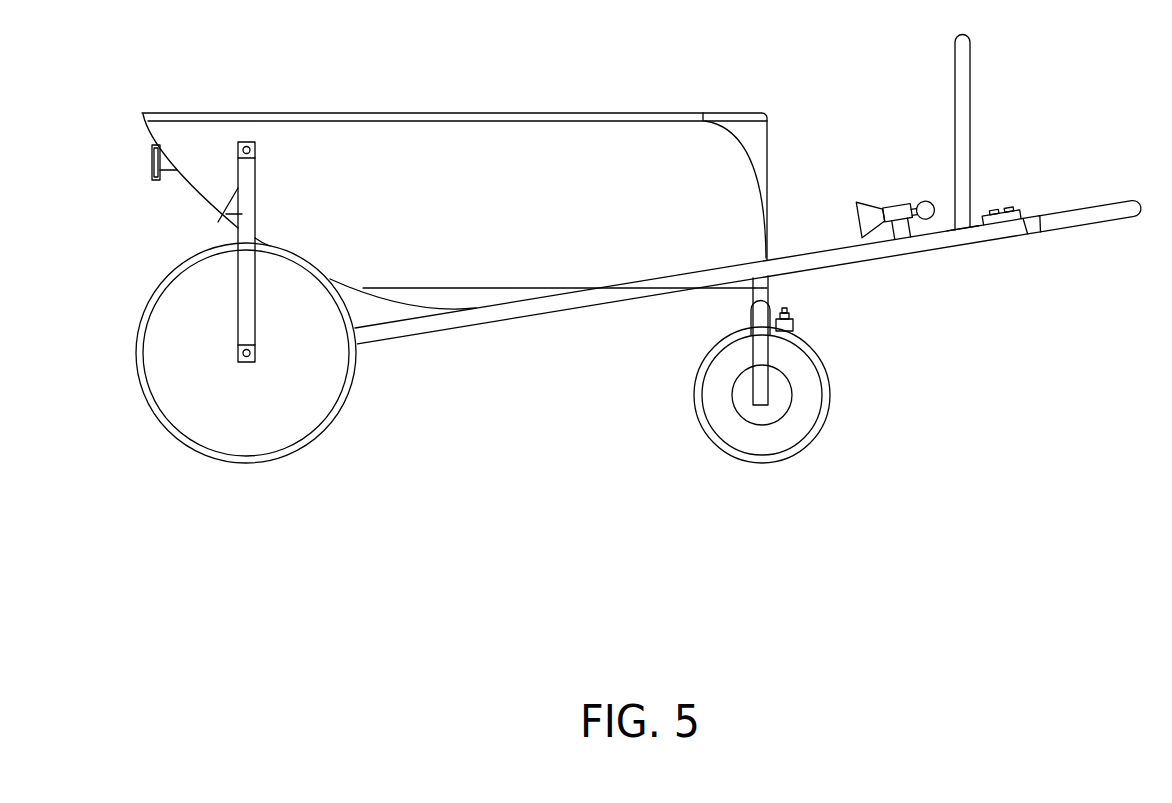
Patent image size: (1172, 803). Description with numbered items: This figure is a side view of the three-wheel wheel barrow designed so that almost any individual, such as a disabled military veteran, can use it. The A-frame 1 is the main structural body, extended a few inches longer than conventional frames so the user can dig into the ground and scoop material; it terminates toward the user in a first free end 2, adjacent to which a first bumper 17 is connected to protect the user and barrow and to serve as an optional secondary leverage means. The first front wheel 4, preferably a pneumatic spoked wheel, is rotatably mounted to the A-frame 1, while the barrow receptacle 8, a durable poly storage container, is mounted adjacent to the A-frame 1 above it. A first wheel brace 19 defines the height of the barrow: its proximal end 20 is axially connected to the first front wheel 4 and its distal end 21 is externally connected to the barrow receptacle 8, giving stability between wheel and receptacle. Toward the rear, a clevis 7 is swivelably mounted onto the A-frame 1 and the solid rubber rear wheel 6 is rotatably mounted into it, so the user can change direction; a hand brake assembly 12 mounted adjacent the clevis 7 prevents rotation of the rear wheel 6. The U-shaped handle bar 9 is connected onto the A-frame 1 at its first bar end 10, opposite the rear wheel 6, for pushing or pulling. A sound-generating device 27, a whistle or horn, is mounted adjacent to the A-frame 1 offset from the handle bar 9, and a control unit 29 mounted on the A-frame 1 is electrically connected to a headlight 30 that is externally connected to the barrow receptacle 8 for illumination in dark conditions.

The A-frame 1 is at (502, 315).
The first free end 2 is at (1036, 250).
The first front wheel 4 is at (313, 384).
The rear wheel 6 is at (822, 416).
The clevis 7 is at (760, 301).
The barrow receptacle 8 is at (477, 184).
The handle bar 9 is at (966, 129).
The first bar end 10 is at (962, 241).
The hand brake assembly 12 is at (812, 323).
The first bumper 17 is at (1078, 228).
The first wheel brace 19 is at (218, 222).
The proximal end 20 is at (233, 355).
The distal end 21 is at (264, 148).
The sound-generating device 27 is at (897, 206).
The control unit 29 is at (999, 212).
The headlight 30 is at (156, 163).